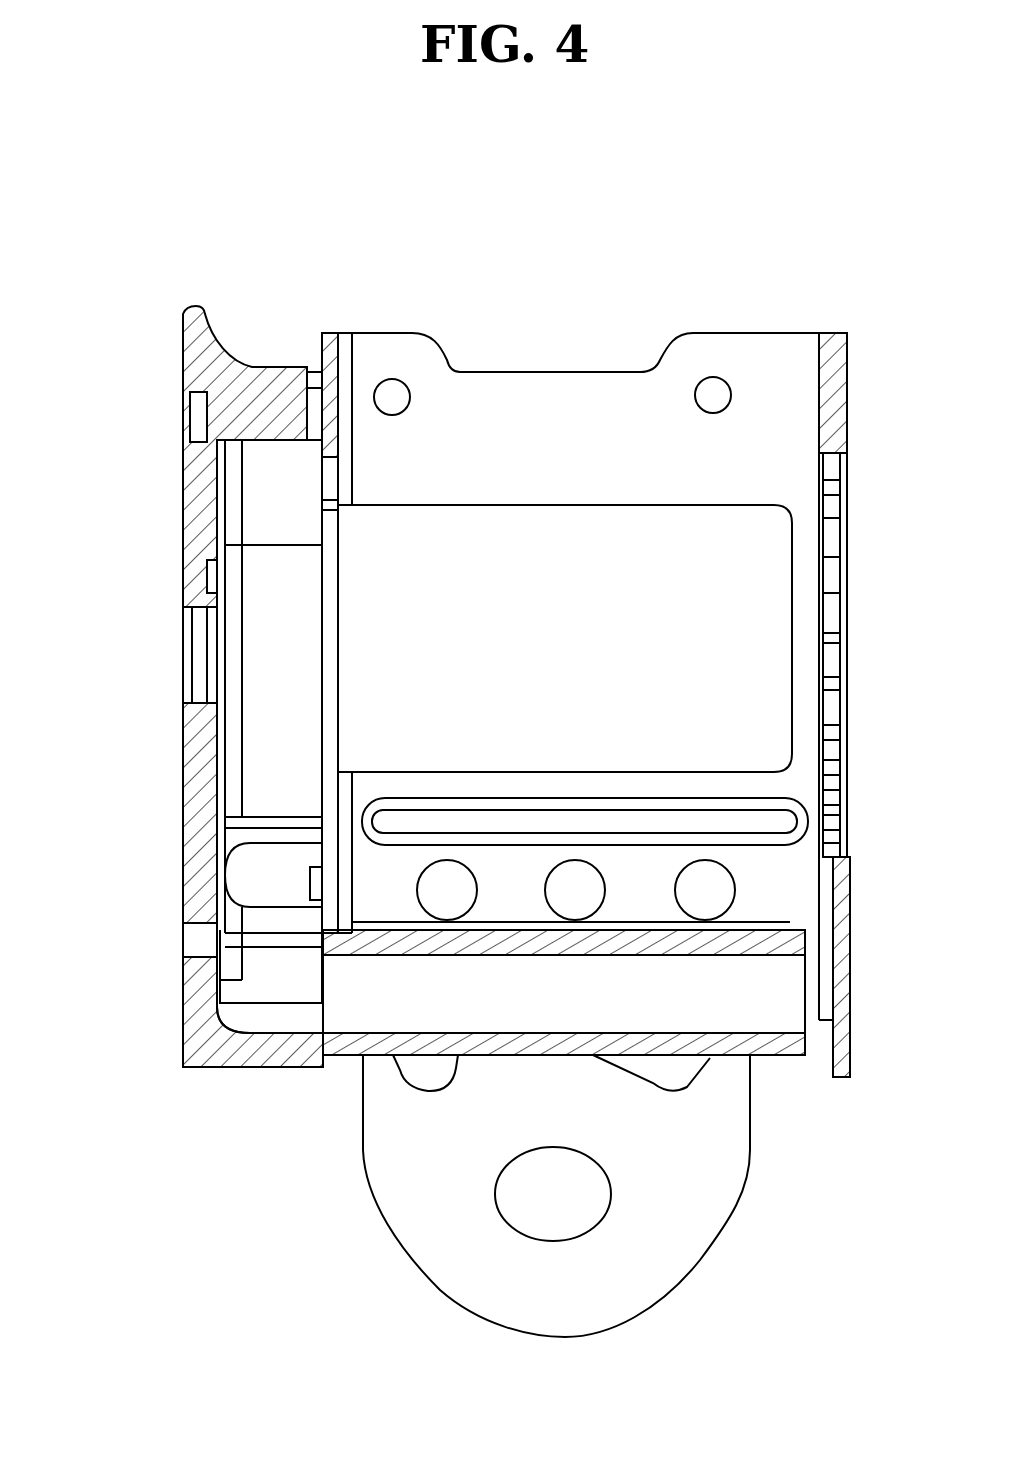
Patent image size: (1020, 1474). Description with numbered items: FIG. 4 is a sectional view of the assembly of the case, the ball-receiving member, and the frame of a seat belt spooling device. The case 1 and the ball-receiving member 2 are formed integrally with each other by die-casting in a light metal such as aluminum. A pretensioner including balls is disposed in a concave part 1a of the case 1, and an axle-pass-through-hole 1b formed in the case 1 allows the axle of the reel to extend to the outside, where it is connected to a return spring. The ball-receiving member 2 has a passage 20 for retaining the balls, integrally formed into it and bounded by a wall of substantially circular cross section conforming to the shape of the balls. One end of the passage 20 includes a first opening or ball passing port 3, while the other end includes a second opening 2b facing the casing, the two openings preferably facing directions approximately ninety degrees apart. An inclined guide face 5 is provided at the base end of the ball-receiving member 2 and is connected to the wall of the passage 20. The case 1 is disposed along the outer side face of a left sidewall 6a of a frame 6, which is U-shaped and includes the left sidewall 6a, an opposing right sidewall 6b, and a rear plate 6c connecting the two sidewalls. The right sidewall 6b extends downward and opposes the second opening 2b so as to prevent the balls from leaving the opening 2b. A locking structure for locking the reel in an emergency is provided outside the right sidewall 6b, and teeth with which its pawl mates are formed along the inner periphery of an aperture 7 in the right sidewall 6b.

The case 1 is at (176, 352).
The concave part 1a is at (292, 643).
The axle-pass-through-hole 1b is at (192, 640).
The ball-receiving member 2 is at (493, 1055).
The opening 2b is at (805, 985).
The ball passing port 3 is at (283, 947).
The inclined guide face 5 is at (278, 1015).
The frame 6 is at (575, 356).
The left sidewall 6a is at (377, 333).
The right sidewall 6b is at (818, 363).
The rear plate 6c is at (477, 403).
The aperture 7 is at (830, 578).
The passage 20 is at (583, 993).